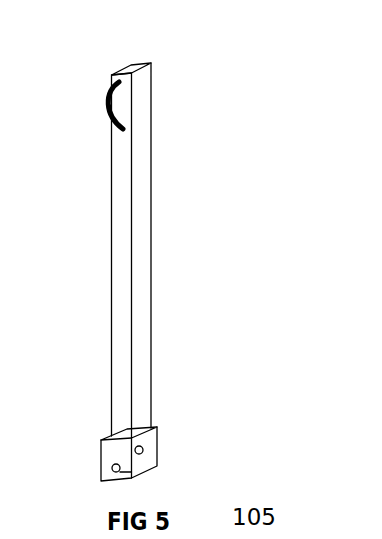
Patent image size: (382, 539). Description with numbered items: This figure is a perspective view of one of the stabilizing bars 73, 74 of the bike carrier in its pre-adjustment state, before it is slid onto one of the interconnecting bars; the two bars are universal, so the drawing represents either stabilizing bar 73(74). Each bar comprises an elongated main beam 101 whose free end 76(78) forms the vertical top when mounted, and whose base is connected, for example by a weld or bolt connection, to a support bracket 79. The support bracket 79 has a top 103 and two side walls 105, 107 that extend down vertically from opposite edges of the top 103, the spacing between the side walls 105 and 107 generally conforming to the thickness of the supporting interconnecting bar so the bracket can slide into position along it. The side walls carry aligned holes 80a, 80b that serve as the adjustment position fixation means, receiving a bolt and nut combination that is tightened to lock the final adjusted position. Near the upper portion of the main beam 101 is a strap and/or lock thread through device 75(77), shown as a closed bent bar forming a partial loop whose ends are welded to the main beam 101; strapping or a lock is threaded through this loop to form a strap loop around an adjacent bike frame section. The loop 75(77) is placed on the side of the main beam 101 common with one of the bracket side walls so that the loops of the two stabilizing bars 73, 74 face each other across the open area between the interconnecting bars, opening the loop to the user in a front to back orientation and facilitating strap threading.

The stabilizing bar 73 is at (247, 250).
The stabilizing bar 74 is at (127, 240).
The strap and/or lock thread through device 75 is at (62, 105).
The free end 76 is at (188, 45).
The strap and/or lock thread through device 77 is at (117, 105).
The free end 78 is at (133, 63).
The support bracket 79 is at (108, 448).
The aligned hole 80a is at (114, 471).
The aligned hole 80b is at (143, 449).
The main beam 101 is at (143, 363).
The top 103 is at (150, 430).
The side wall 105 is at (122, 472).
The side wall 107 is at (150, 457).